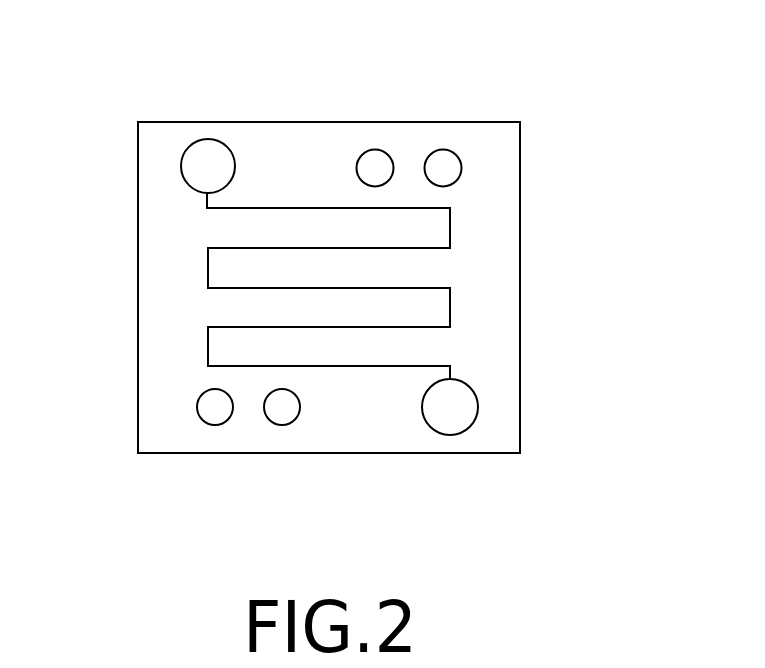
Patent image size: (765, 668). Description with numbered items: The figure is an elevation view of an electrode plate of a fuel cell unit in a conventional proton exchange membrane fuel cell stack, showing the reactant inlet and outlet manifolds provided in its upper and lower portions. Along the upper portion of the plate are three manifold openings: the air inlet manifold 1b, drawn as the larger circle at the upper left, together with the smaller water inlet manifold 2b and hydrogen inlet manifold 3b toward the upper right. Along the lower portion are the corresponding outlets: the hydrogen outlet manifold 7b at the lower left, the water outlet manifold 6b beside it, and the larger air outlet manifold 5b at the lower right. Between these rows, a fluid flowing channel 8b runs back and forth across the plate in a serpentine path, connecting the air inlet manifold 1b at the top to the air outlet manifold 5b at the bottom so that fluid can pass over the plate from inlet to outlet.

The air inlet manifold 1b is at (212, 164).
The water inlet manifold 2b is at (380, 163).
The hydrogen inlet manifold 3b is at (452, 166).
The air outlet manifold 5b is at (432, 434).
The water outlet manifold 6b is at (284, 415).
The hydrogen outlet manifold 7b is at (195, 412).
The fluid flowing channel 8b is at (455, 228).